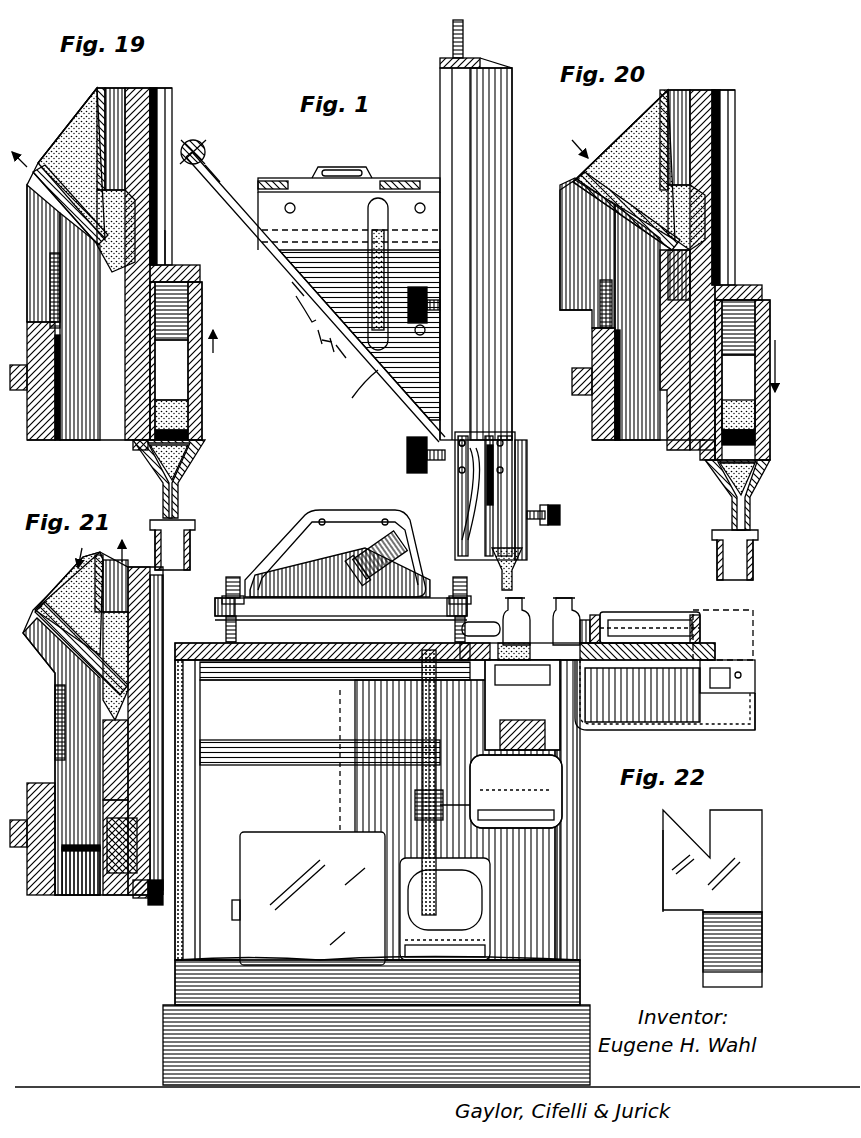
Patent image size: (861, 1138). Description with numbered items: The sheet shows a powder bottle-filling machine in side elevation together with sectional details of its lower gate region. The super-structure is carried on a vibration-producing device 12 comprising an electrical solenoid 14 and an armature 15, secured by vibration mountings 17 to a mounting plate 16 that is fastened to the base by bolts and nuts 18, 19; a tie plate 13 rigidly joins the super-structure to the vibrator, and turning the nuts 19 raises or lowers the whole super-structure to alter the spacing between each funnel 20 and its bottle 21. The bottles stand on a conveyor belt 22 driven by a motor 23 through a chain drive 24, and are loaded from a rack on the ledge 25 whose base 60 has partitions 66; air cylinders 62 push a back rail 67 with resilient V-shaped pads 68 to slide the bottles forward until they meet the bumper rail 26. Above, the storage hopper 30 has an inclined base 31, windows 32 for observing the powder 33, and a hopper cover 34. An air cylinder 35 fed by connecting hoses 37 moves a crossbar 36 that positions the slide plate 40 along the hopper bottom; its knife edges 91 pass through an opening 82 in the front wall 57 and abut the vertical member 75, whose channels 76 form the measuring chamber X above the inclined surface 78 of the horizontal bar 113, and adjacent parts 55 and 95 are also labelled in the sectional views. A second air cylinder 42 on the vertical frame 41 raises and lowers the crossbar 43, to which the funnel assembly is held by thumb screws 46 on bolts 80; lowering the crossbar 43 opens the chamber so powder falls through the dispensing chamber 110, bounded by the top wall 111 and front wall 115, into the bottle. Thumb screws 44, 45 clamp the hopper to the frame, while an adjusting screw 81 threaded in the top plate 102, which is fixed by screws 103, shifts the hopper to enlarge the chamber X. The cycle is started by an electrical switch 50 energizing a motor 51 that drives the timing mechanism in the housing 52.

In FIG. 1, the vibration-producing device 12 is at (298, 528).
In FIG. 19, the tie plate 13 is at (40, 440).
In FIG. 21, the tie plate 13 is at (28, 895).
In FIG. 20, the tie plate 13 is at (580, 328).
In FIG. 1, the electrical solenoid 14 is at (380, 555).
In FIG. 1, the armature 15 is at (390, 562).
In FIG. 1, the mounting plate 16 is at (372, 616).
In FIG. 1, the vibration mountings 17 is at (300, 616).
In FIG. 1, the bolts 18 is at (226, 628).
In FIG. 1, the nuts 19 is at (226, 598).
In FIG. 19, the funnel 20 is at (190, 472).
In FIG. 21, the funnel 20 is at (152, 905).
In FIG. 20, the funnel 20 is at (718, 490).
In FIG. 1, the funnel 20 is at (520, 560).
In FIG. 19, the bottle 21 is at (195, 528).
In FIG. 20, the bottle 21 is at (715, 555).
In FIG. 1, the bottle 21 is at (522, 605).
In FIG. 1, the conveyor belt 22 is at (485, 722).
In FIG. 1, the motor 23 is at (520, 828).
In FIG. 1, the chain drive 24 is at (422, 722).
In FIG. 1, the ledge 25 is at (752, 735).
In FIG. 1, the bumper rail 26 is at (488, 622).
In FIG. 19, the storage hopper 30 is at (68, 145).
In FIG. 21, the storage hopper 30 is at (69, 594).
In FIG. 20, the storage hopper 30 is at (620, 135).
In FIG. 1, the storage hopper 30 is at (395, 185).
In FIG. 1, the inclined base 31 is at (352, 370).
In FIG. 1, the windows 32 is at (368, 215).
In FIG. 19, the powder 33 is at (66, 130).
In FIG. 21, the powder 33 is at (70, 585).
In FIG. 20, the powder 33 is at (633, 125).
In FIG. 1, the powder 33 is at (372, 240).
In FIG. 1, the hopper cover 34 is at (313, 176).
In FIG. 1, the air cylinder 35 is at (280, 270).
In FIG. 1, the crossbar 36 is at (199, 142).
In FIG. 1, the connecting hoses 37 is at (335, 358).
In FIG. 19, the slide plate 40 is at (55, 160).
In FIG. 21, the slide plate 40 is at (50, 605).
In FIG. 20, the slide plate 40 is at (600, 195).
In FIG. 1, the slide plate 40 is at (222, 170).
In FIG. 19, the vertical frame 41 is at (172, 118).
In FIG. 20, the vertical frame 41 is at (735, 195).
In FIG. 1, the vertical frame 41 is at (505, 400).
In FIG. 1, the air cylinder 42 is at (512, 435).
In FIG. 19, the crossbar 43 is at (140, 452).
In FIG. 21, the crossbar 43 is at (135, 898).
In FIG. 20, the crossbar 43 is at (683, 455).
In FIG. 22, the crossbar 43 is at (705, 952).
In FIG. 1, the crossbar 43 is at (520, 490).
In FIG. 1, the thumb screw 44 is at (407, 455).
In FIG. 1, the thumb screw 45 is at (330, 315).
In FIG. 1, the thumb screws 46 is at (555, 512).
In FIG. 1, the electrical switch 50 is at (735, 678).
In FIG. 1, the motor 51 is at (432, 870).
In FIG. 1, the housing 52 is at (310, 840).
In FIG. 1, the screw 55 is at (455, 440).
In FIG. 19, the front wall 57 is at (97, 95).
In FIG. 21, the front wall 57 is at (82, 915).
In FIG. 20, the front wall 57 is at (664, 95).
In FIG. 1, the rack base 60 is at (700, 640).
In FIG. 1, the air cylinders 62 is at (640, 622).
In FIG. 1, the partitions 66 is at (692, 615).
In FIG. 1, the back rail 67 is at (595, 620).
In FIG. 1, the resilient V-shaped pads 68 is at (615, 618).
In FIG. 19, the vertical member 75 is at (165, 92).
In FIG. 21, the vertical member 75 is at (140, 605).
In FIG. 20, the vertical member 75 is at (730, 102).
In FIG. 19, the channel 76 is at (118, 100).
In FIG. 21, the channel 76 is at (120, 563).
In FIG. 20, the channel 76 is at (680, 100).
In FIG. 19, the inclined surface 78 is at (175, 300).
In FIG. 21, the inclined surface 78 is at (100, 738).
In FIG. 20, the inclined surface 78 is at (728, 265).
In FIG. 22, the inclined surface 78 is at (684, 818).
In FIG. 1, the bolts 80 is at (562, 518).
In FIG. 1, the adjusting screw 81 is at (463, 40).
In FIG. 19, the opening 82 is at (102, 208).
In FIG. 21, the opening 82 is at (60, 640).
In FIG. 20, the opening 82 is at (640, 235).
In FIG. 19, the knife edges 91 is at (45, 200).
In FIG. 20, the knife edges 91 is at (735, 220).
In FIG. 19, the wall 95 is at (62, 238).
In FIG. 21, the wall 95 is at (62, 672).
In FIG. 20, the wall 95 is at (620, 225).
In FIG. 1, the wall 95 is at (345, 335).
In FIG. 1, the top plate 102 is at (490, 65).
In FIG. 1, the screws 103 is at (440, 63).
In FIG. 19, the dispensing chamber 110 is at (178, 362).
In FIG. 20, the dispensing chamber 110 is at (745, 365).
In FIG. 19, the top wall 111 is at (170, 245).
In FIG. 20, the top wall 111 is at (740, 290).
In FIG. 19, the horizontal bar 113 is at (195, 330).
In FIG. 21, the horizontal bar 113 is at (112, 790).
In FIG. 20, the horizontal bar 113 is at (680, 320).
In FIG. 22, the horizontal bar 113 is at (665, 858).
In FIG. 19, the front wall 115 is at (200, 405).
In FIG. 20, the front wall 115 is at (758, 416).
In FIG. 1, the front wall 115 is at (515, 466).
In FIG. 19, the measuring chamber X is at (52, 270).
In FIG. 21, the measuring chamber X is at (110, 700).
In FIG. 20, the measuring chamber X is at (700, 250).